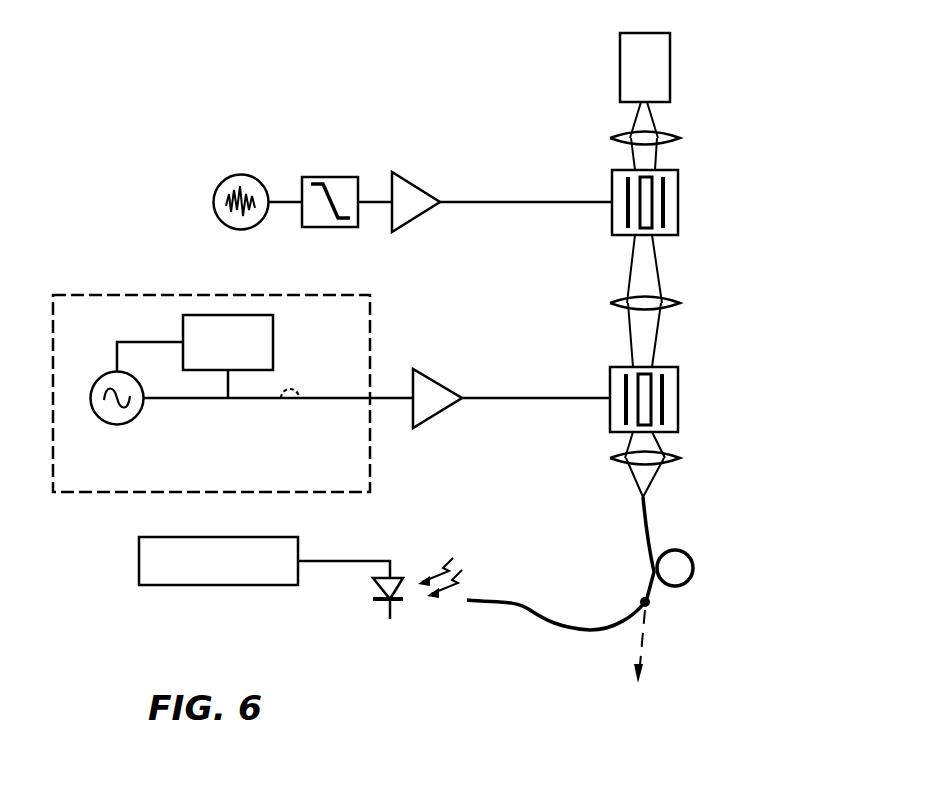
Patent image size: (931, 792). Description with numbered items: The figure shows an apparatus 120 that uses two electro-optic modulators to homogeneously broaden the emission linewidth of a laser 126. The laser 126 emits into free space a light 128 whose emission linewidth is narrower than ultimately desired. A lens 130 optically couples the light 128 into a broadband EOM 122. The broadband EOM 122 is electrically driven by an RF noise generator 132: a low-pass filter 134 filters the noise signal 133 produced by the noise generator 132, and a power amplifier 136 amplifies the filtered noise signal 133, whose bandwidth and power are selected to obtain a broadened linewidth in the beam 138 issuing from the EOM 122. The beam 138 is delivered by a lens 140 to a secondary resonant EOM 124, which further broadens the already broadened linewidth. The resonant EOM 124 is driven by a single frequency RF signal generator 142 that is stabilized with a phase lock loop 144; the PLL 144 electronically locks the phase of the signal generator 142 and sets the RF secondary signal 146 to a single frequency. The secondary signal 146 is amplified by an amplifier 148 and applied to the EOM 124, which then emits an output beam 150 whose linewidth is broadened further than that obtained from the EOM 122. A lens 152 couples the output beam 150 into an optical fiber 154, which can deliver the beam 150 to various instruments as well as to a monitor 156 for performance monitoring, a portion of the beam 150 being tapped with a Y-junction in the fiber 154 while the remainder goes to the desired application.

The apparatus 120 is at (128, 101).
The broadband EOM 122 is at (678, 198).
The secondary resonant EOM 124 is at (678, 397).
The laser 126 is at (670, 55).
The light 128 is at (630, 108).
The lens 130 is at (680, 138).
The RF noise generator 132 is at (262, 225).
The noise signal 133 is at (245, 186).
The low-pass filter 134 is at (343, 177).
The power amplifier 136 is at (418, 183).
The beam 138 is at (630, 268).
The lens 140 is at (680, 303).
The single frequency RF signal generator 142 is at (127, 422).
The phase lock loop 144 is at (273, 320).
The RF secondary signal 146 is at (296, 412).
The amplifier 148 is at (435, 380).
The output beam 150 is at (617, 440).
The lens 152 is at (680, 458).
The optical fiber 154 is at (693, 565).
The monitor 156 is at (139, 558).